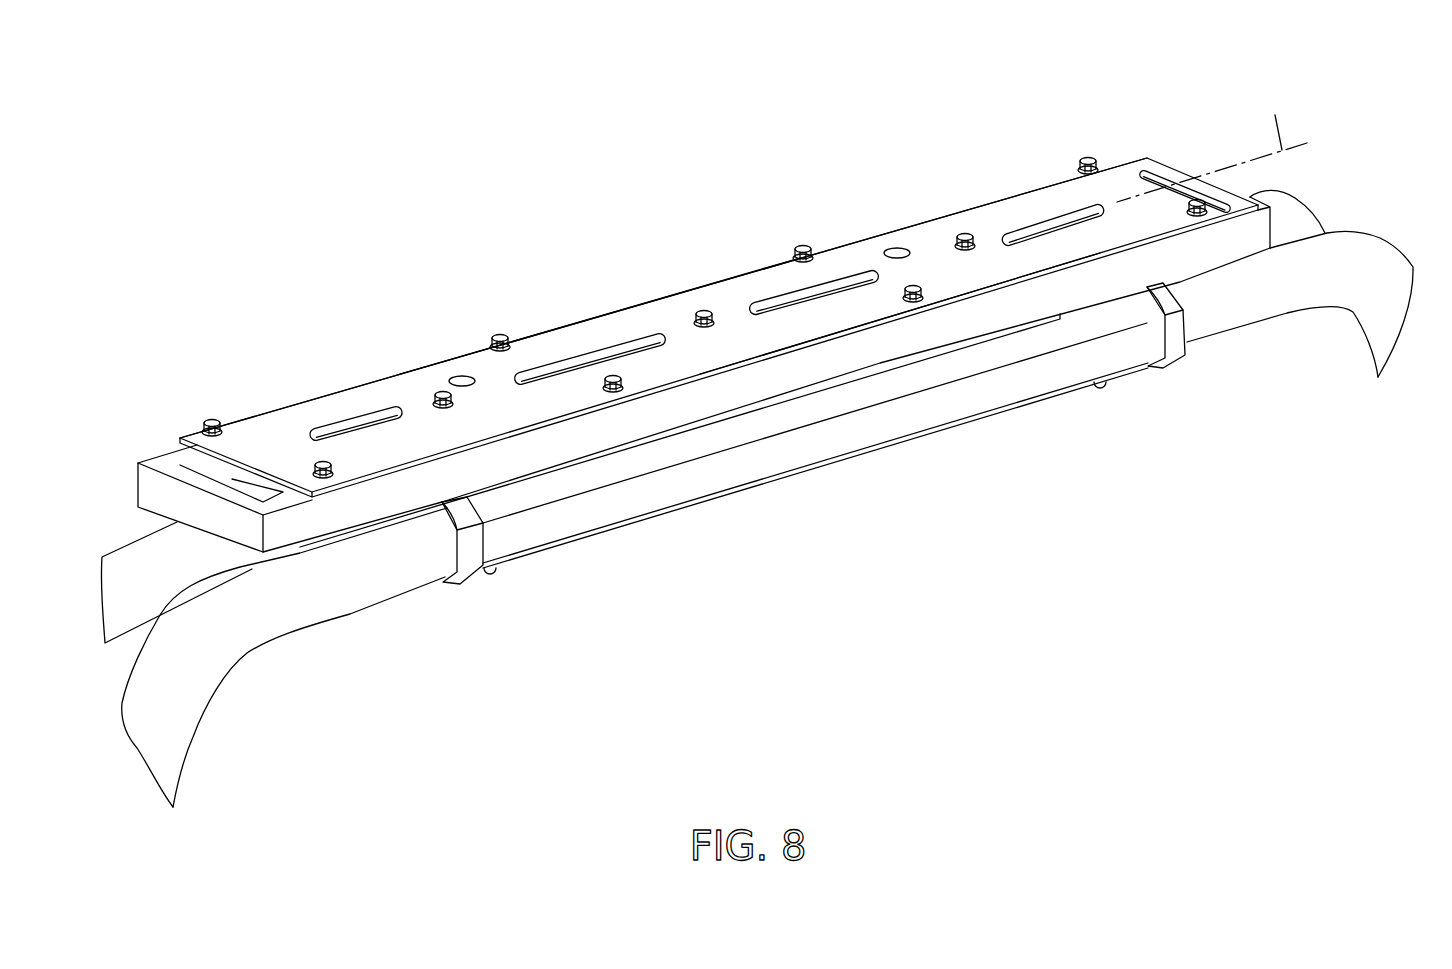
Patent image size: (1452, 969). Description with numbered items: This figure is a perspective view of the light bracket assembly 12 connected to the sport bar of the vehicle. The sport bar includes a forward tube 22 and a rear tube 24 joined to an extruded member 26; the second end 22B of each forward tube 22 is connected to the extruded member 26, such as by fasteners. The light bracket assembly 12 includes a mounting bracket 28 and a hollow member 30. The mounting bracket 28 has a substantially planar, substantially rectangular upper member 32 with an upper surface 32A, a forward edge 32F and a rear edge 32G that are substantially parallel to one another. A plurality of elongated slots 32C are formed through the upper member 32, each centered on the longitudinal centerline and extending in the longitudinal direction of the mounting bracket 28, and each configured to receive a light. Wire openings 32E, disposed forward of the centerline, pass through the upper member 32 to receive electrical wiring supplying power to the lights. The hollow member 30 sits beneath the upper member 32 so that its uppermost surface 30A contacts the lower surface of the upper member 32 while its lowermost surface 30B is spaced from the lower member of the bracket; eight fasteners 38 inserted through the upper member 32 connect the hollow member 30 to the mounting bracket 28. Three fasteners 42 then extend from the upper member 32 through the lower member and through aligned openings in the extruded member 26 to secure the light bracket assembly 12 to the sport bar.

The light bracket assembly 12 is at (987, 143).
The forward tube 22 is at (195, 745).
The second end 22B is at (428, 590).
The rear tube 24 is at (125, 545).
The extruded member 26 is at (808, 470).
The mounting bracket 28 is at (861, 224).
The hollow member 30 is at (669, 385).
The uppermost surface 30A is at (158, 468).
The lowermost surface 30B is at (215, 540).
The upper member 32 is at (741, 272).
The upper surface 32A is at (1122, 185).
The elongated slot 32C is at (315, 432).
The wire opening 32E is at (462, 374).
The forward edge 32F is at (967, 293).
The rear edge 32G is at (579, 320).
The fastener 38 is at (212, 420).
The fastener 42 is at (703, 311).